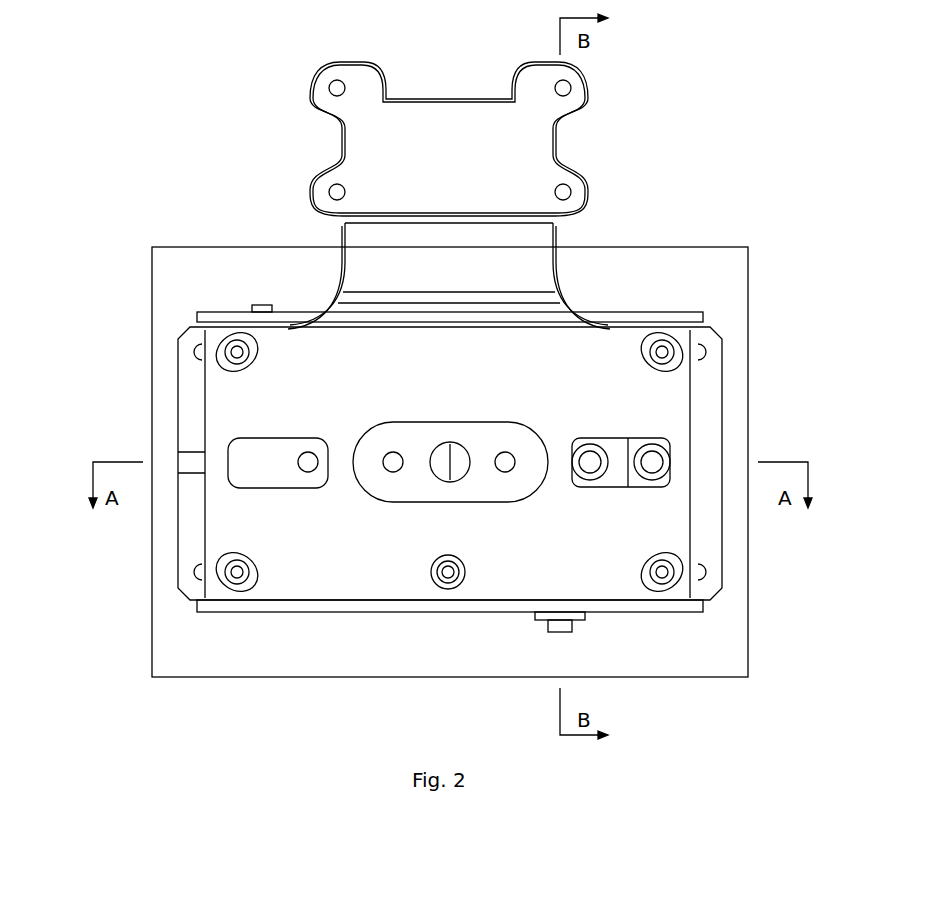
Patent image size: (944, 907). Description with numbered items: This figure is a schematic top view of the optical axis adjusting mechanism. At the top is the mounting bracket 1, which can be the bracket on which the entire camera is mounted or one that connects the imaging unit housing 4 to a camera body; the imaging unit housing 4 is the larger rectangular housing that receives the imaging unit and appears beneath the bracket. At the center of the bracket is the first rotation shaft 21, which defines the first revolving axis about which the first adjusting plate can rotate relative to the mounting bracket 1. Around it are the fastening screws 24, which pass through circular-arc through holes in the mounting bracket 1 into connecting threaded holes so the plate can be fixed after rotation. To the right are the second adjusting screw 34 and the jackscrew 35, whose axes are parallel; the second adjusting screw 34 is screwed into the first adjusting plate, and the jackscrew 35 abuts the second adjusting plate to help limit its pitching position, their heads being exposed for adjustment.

The mounting bracket 1 is at (485, 156).
The imaging unit housing 4 is at (265, 266).
The first rotation shaft 21 is at (468, 462).
The fastening screws 24 is at (232, 354).
The second adjusting screw 34 is at (655, 463).
The jackscrew 35 is at (592, 462).